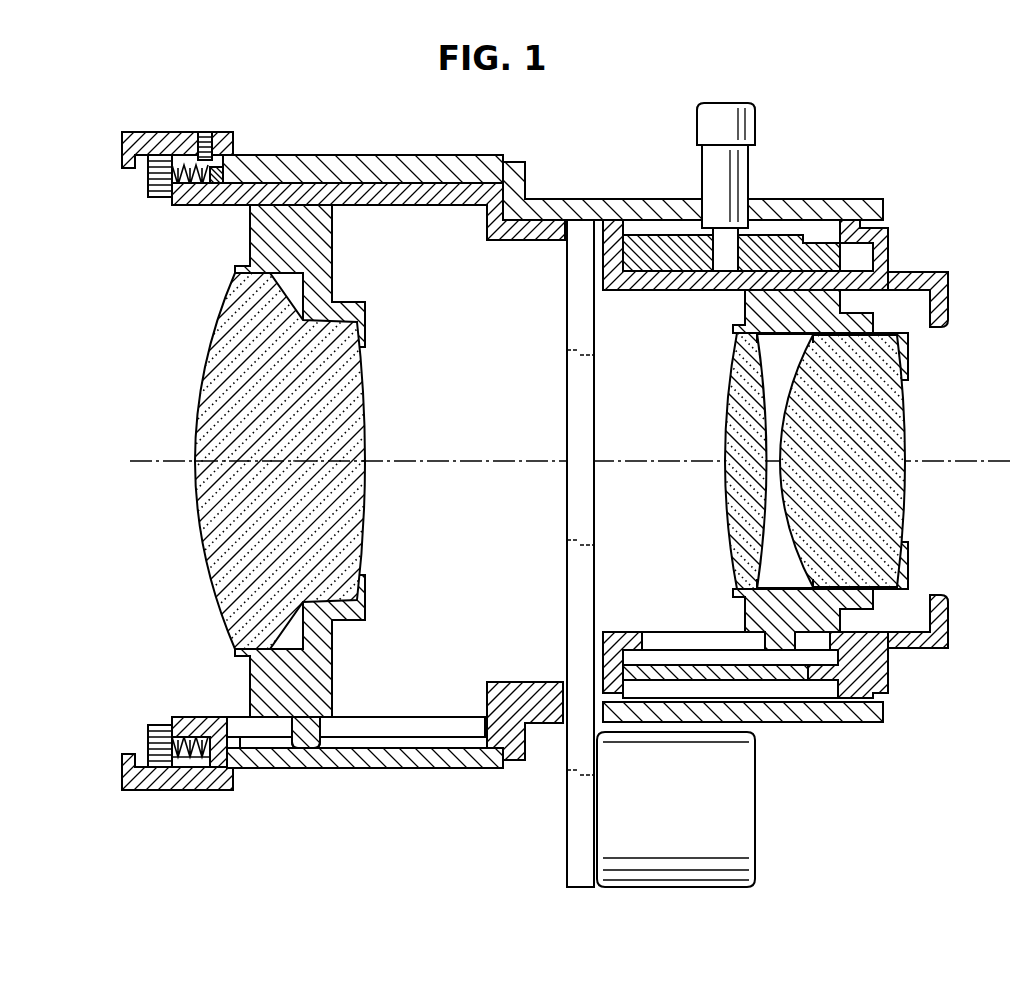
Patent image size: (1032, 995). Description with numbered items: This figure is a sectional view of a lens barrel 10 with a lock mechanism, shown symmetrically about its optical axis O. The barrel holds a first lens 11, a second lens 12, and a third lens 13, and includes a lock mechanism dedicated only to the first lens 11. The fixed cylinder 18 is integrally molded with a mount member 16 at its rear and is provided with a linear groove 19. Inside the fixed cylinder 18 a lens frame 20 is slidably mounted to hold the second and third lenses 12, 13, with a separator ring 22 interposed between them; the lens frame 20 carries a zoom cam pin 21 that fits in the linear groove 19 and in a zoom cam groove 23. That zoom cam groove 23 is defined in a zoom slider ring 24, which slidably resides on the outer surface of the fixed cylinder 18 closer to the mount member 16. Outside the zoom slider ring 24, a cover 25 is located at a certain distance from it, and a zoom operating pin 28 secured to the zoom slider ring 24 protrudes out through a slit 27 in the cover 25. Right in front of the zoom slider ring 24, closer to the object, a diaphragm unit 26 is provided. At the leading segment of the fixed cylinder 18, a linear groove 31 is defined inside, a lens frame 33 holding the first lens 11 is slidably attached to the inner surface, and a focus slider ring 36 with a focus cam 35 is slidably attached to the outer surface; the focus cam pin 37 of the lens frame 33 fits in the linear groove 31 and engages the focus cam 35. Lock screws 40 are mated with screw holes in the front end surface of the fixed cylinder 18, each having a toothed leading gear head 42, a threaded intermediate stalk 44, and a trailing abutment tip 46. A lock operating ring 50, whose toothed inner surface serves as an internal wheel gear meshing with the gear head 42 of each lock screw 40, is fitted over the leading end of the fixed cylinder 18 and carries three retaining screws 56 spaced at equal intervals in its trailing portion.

The lens barrel 10 is at (548, 150).
The first lens 11 is at (228, 372).
The second lens 12 is at (745, 410).
The third lens 13 is at (900, 420).
The mount member 16 is at (938, 303).
The fixed cylinder 18 is at (415, 205).
The linear groove 19 is at (680, 632).
The lens frame 20 is at (905, 571).
The zoom cam pin 21 is at (770, 632).
The separator ring 22 is at (780, 577).
The zoom cam groove 23 is at (728, 660).
The zoom slider ring 24 is at (795, 249).
The cover 25 is at (840, 717).
The diaphragm unit 26 is at (740, 812).
The slit 27 is at (697, 202).
The zoom operating pin 28 is at (730, 112).
The linear groove 31 is at (420, 728).
The lens frame 33 is at (320, 682).
The focus cam 35 is at (383, 746).
The focus slider ring 36 is at (347, 162).
The focus cam pin 37 is at (310, 752).
The lock screw 40 is at (157, 200).
The toothed leading gear head 42 is at (150, 180).
The threaded intermediate stalk 44 is at (190, 170).
The trailing abutment tip 46 is at (222, 175).
The lock operating ring 50 is at (143, 140).
The retaining screw 56 is at (206, 140).
The optical axis O is at (138, 461).